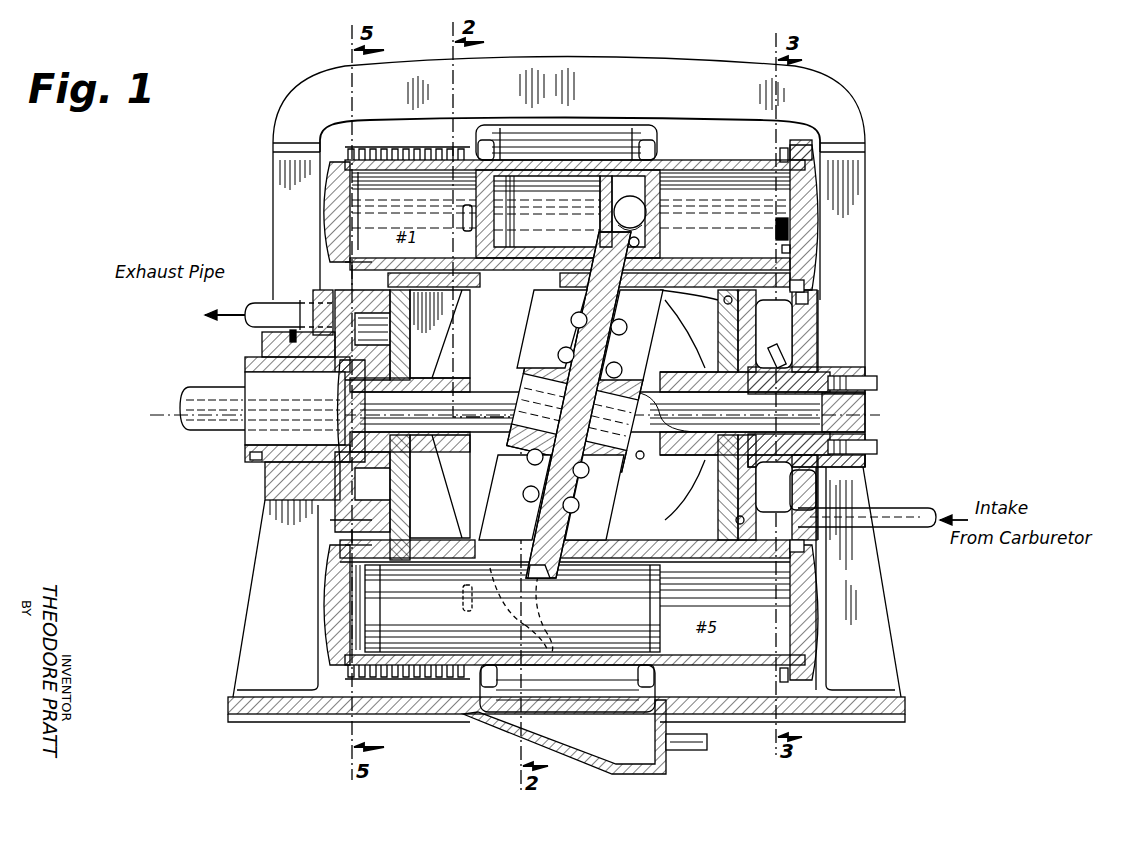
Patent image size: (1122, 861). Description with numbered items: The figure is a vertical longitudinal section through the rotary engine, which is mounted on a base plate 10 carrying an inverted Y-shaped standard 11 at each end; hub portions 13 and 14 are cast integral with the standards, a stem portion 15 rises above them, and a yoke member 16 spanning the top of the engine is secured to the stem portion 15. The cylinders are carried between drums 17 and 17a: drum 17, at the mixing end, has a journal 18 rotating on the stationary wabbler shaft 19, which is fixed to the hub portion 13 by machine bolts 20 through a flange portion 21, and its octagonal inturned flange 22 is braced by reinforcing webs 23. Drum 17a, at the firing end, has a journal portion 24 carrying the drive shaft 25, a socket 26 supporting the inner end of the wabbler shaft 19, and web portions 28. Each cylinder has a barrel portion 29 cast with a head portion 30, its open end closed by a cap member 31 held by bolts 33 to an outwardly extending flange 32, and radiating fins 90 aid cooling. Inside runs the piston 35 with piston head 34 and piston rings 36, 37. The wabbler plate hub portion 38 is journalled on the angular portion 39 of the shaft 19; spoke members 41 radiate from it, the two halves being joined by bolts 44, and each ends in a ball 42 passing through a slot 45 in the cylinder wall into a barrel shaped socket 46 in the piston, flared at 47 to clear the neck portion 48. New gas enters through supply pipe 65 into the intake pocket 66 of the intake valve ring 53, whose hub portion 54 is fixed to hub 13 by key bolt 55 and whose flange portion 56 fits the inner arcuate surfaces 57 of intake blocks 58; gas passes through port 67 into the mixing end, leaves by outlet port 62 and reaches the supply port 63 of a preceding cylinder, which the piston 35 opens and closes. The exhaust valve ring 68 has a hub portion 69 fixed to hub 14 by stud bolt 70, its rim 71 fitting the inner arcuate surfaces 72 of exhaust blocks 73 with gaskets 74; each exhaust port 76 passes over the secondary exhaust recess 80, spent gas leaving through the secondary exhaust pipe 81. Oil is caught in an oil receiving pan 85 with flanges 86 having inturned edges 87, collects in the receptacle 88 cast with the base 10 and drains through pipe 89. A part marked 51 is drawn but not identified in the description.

The base plate 10 is at (240, 707).
The inverted Y-shaped standard 11 is at (262, 560).
The hub portion 13 is at (830, 372).
The hub portion 14 is at (262, 343).
The stem portion 15 is at (286, 180).
The yoke member 16 is at (636, 77).
The drum 17 is at (718, 340).
The drum member 17a is at (430, 338).
The journal 18 is at (690, 380).
The wabbler shaft 19 is at (806, 412).
The machine bolts 20 is at (878, 382).
The flange portion 21 is at (866, 460).
The inturned flange 22 is at (690, 305).
The reinforcing webs 23 is at (700, 318).
The journal portion 24 is at (268, 386).
The drive shaft 25 is at (192, 402).
The socket 26 is at (340, 400).
The web portions 28 is at (430, 358).
The barrel portion 29 is at (380, 146).
The head portion 30 is at (330, 198).
The cap member 31 is at (806, 192).
The outwardly extending flange 32 is at (790, 150).
The bolts 33 is at (790, 152).
The piston head 34 is at (490, 224).
The piston 35 is at (416, 680).
The piston rings 36 is at (490, 262).
The piston rings 37 is at (728, 161).
The hub portion of wabbler plate 38 is at (535, 372).
The angular portion 39 is at (732, 303).
The spoke members 41 is at (612, 296).
The ball 42 is at (624, 215).
The bolts 44 is at (571, 320).
The slot 45 is at (596, 556).
The barrel shaped socket 46 is at (606, 175).
The flared portion 47 is at (640, 242).
The neck portion 48 is at (530, 560).
The rib 51 is at (857, 605).
The intake valve ring 53 is at (800, 312).
The hub portion 54 is at (850, 482).
The key bolt 55 is at (790, 352).
The outwardly extending flange portion 56 is at (820, 300).
The inner arcuate surfaces 57 is at (810, 292).
The intake blocks 58 is at (760, 265).
The new gas outlet port 62 is at (790, 250).
The new gas supply port 63 is at (462, 232).
The supply pipe 65 is at (912, 509).
The intake pocket 66 is at (812, 500).
The port 67 is at (800, 280).
The exhaust valve ring 68 is at (265, 486).
The hub portion 69 is at (248, 456).
The stud bolt 70 is at (290, 330).
The flange portion 71 is at (294, 328).
The inner arcuate surfaces 72 is at (330, 520).
The exhaust blocks 73 is at (345, 272).
The gaskets 74 is at (375, 264).
The exhaust port 76 is at (356, 280).
The secondary exhaust recess 80 is at (428, 312).
The secondary exhaust pipe 81 is at (258, 305).
The oil receiving pan 85 is at (546, 126).
The flanges 86 is at (484, 140).
The inturned edges 87 is at (504, 127).
The oil receiving receptacle 88 is at (614, 764).
The pipe 89 is at (698, 751).
The radiating fins 90 is at (398, 146).